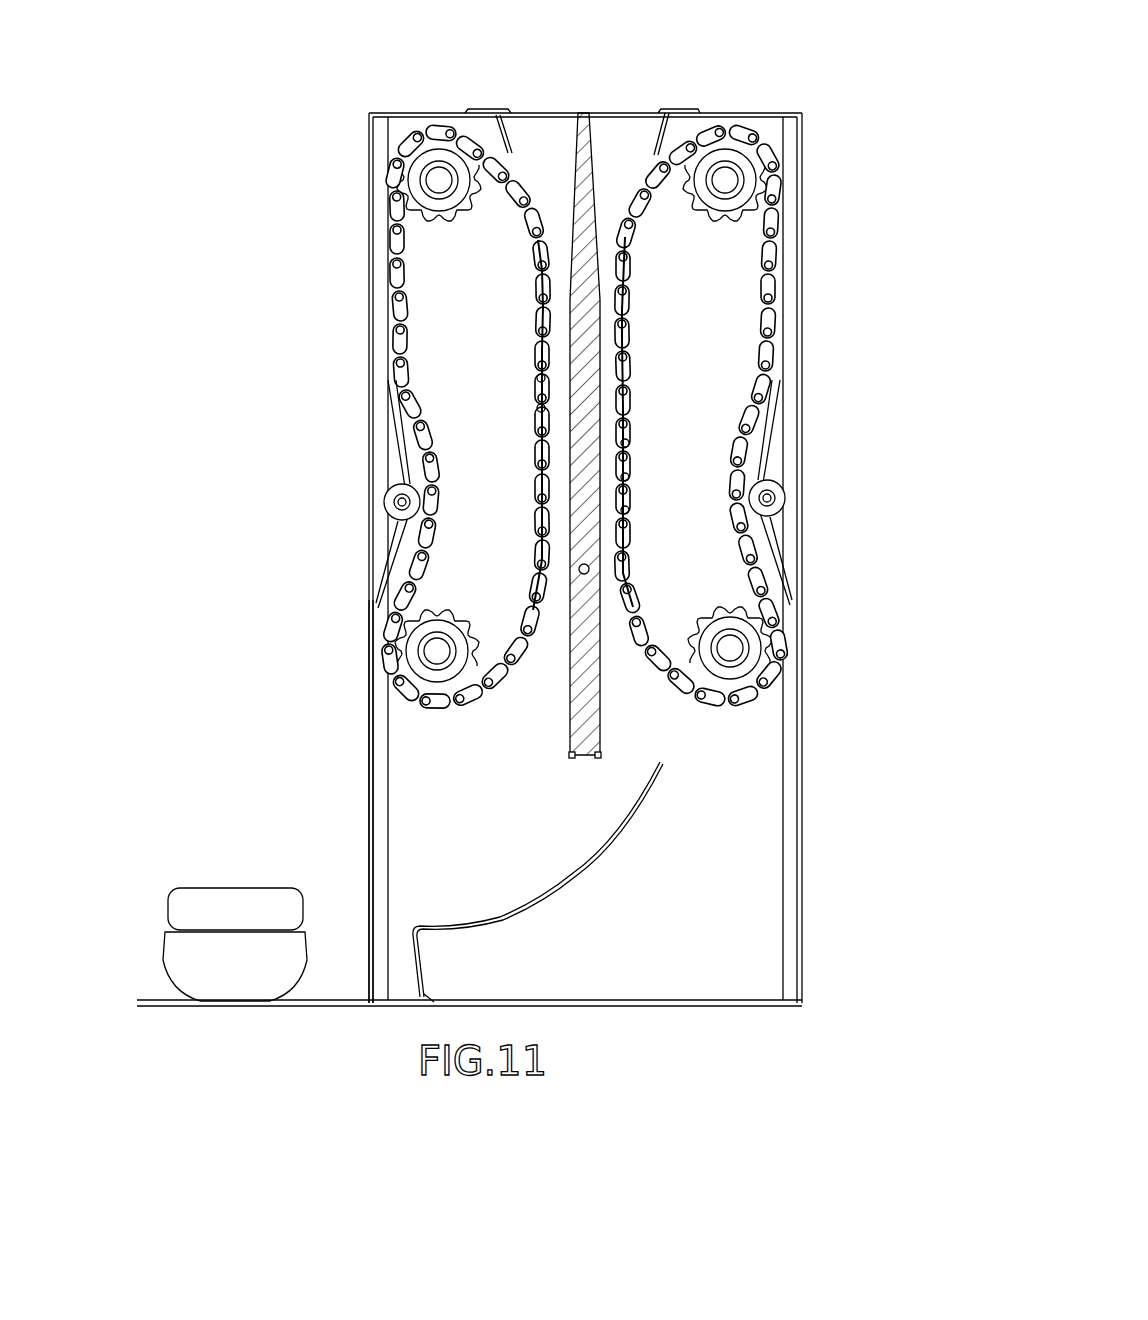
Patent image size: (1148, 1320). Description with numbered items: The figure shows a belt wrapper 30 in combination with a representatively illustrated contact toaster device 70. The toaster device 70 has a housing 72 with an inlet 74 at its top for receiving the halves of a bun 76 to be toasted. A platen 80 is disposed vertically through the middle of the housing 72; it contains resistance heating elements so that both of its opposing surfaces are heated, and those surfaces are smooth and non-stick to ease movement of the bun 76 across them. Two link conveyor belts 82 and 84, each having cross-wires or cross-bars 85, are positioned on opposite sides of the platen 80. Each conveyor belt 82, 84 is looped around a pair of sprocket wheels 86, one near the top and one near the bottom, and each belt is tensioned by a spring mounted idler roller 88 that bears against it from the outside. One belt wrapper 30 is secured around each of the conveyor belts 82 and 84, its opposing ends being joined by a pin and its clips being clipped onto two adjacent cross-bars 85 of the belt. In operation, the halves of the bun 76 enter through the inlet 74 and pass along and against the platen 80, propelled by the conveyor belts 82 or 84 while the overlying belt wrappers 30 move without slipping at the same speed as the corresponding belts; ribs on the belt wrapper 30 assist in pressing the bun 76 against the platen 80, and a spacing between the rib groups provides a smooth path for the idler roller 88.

The contact toaster device 70 is at (312, 351).
The housing 72 is at (368, 691).
The inlet 74 is at (616, 90).
The bun 76 is at (207, 900).
The platen 80 is at (570, 740).
The link conveyor belt 82 is at (538, 330).
The link conveyor belt 84 is at (630, 375).
The cross-bars 85 is at (538, 378).
The sprocket wheels 86 is at (468, 212).
The spring mounted idler roller 88 is at (384, 500).
The belt wrapper 30 is at (522, 178).